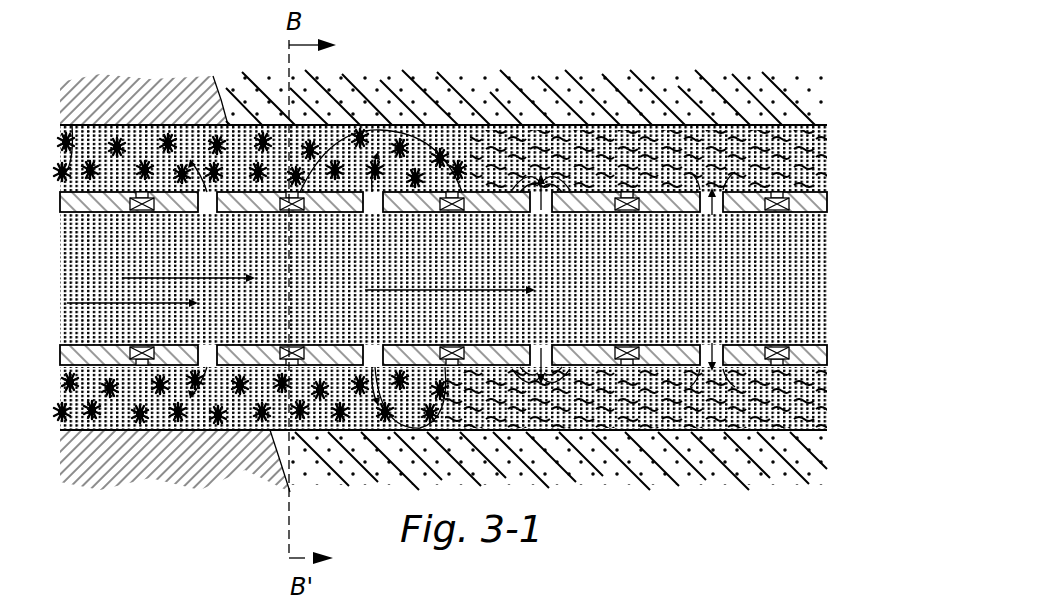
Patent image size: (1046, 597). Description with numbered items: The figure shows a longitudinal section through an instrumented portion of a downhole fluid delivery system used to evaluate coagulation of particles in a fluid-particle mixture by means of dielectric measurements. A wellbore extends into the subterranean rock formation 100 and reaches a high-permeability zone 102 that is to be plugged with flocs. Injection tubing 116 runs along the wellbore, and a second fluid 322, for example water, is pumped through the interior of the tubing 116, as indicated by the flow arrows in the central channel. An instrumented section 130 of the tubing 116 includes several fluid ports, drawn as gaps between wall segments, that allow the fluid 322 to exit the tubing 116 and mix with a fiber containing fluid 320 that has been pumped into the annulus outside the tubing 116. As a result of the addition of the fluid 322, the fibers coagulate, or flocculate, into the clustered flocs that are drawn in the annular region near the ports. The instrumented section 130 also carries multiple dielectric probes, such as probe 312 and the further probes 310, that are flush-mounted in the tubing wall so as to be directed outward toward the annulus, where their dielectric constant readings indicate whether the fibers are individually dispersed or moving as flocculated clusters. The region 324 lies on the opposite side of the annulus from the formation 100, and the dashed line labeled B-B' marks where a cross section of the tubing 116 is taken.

The subterranean rock formation 100 is at (136, 110).
The high-permeability zone 102 is at (569, 115).
The instrumented section 130 is at (466, 160).
The injection tubing 116 is at (667, 213).
The upper sensor 310 is at (282, 212).
The dielectric probe 312 is at (283, 345).
The second fluid 322 is at (111, 266).
The fiber containing fluid 320 is at (680, 408).
The lower substrate 324 is at (156, 415).